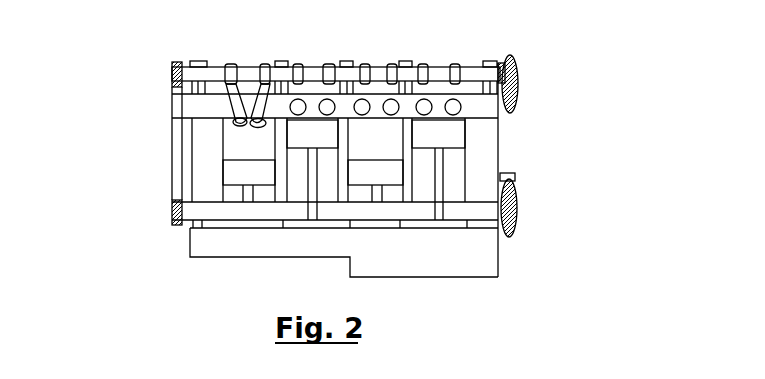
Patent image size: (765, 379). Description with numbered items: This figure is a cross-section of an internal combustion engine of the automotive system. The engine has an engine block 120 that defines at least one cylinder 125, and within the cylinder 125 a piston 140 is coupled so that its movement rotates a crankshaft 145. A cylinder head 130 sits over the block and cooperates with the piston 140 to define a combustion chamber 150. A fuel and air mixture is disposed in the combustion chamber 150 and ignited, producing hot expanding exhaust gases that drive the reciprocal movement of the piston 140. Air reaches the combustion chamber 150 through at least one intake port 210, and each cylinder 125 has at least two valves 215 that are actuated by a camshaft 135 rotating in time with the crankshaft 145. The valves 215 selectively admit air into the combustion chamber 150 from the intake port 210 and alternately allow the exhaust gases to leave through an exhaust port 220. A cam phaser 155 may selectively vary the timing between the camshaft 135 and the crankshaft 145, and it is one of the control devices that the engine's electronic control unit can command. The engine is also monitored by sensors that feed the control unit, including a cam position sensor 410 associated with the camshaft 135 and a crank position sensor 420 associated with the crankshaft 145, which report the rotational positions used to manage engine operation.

The engine block 120 is at (187, 163).
The cylinder 125 is at (350, 147).
The cylinder head 130 is at (177, 118).
The camshaft 135 is at (243, 66).
The piston 140 is at (377, 173).
The crankshaft 145 is at (218, 215).
The combustion chamber 150 is at (448, 121).
The cam phaser 155 is at (172, 72).
The intake port 210 is at (383, 100).
The valves 215 is at (225, 121).
The exhaust port 220 is at (322, 100).
The cam position sensor 410 is at (513, 110).
The crank position sensor 420 is at (515, 178).